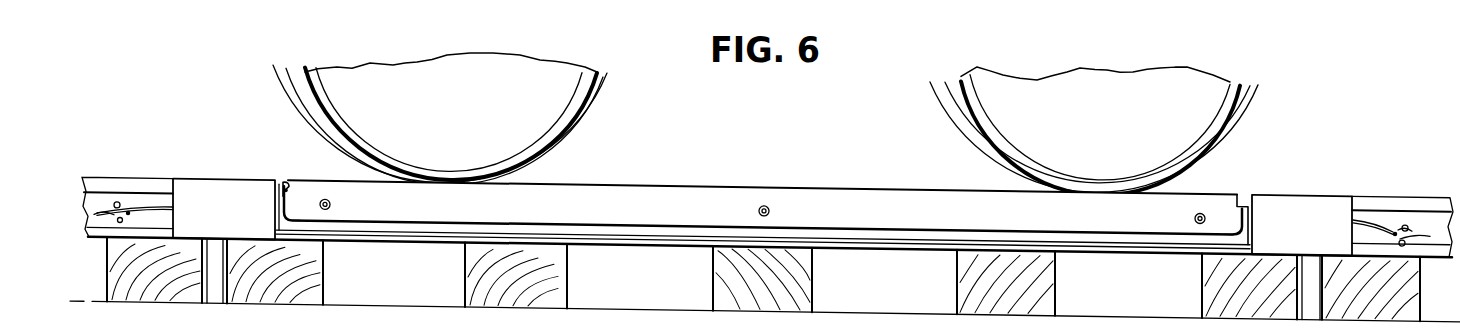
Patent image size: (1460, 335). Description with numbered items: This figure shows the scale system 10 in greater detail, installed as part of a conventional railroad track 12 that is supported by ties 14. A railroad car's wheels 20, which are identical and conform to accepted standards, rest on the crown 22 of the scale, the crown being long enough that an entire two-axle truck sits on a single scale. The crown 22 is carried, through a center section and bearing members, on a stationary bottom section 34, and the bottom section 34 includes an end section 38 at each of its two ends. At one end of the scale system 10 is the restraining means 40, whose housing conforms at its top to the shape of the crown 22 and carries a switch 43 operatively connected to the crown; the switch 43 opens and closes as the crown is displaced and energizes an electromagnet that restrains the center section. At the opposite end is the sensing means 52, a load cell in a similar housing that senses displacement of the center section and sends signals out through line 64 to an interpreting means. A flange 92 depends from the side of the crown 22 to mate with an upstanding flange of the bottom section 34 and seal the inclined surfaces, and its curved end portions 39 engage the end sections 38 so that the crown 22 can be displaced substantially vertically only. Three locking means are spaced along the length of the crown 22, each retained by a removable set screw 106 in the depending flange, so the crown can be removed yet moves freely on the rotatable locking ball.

The scale system 10 is at (759, 210).
The railroad track 12 is at (120, 175).
The ties 14 is at (713, 261).
The wheels 20 is at (283, 88).
The crown 22 is at (838, 175).
The bottom section 34 is at (844, 230).
The end section 38 is at (275, 198).
The curved end portions 39 is at (276, 199).
The restraining means 40 is at (201, 168).
The switch 43 is at (284, 174).
The sensing means 52 is at (1325, 185).
The line 64 is at (1377, 207).
The flange 92 is at (893, 206).
The set screw 106 is at (332, 200).